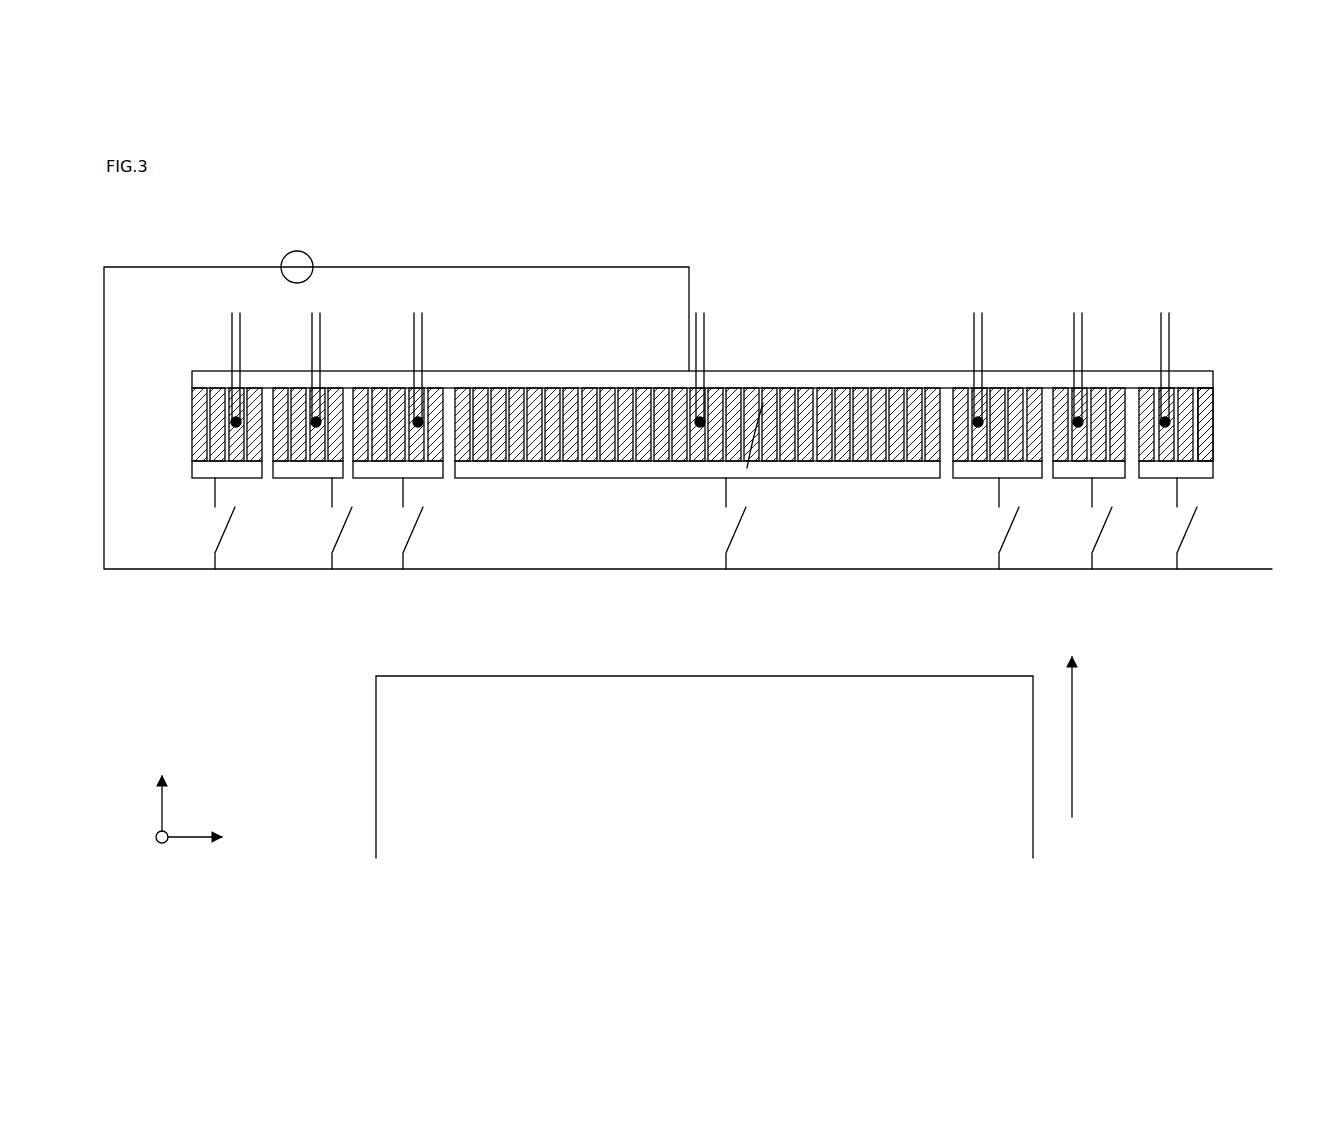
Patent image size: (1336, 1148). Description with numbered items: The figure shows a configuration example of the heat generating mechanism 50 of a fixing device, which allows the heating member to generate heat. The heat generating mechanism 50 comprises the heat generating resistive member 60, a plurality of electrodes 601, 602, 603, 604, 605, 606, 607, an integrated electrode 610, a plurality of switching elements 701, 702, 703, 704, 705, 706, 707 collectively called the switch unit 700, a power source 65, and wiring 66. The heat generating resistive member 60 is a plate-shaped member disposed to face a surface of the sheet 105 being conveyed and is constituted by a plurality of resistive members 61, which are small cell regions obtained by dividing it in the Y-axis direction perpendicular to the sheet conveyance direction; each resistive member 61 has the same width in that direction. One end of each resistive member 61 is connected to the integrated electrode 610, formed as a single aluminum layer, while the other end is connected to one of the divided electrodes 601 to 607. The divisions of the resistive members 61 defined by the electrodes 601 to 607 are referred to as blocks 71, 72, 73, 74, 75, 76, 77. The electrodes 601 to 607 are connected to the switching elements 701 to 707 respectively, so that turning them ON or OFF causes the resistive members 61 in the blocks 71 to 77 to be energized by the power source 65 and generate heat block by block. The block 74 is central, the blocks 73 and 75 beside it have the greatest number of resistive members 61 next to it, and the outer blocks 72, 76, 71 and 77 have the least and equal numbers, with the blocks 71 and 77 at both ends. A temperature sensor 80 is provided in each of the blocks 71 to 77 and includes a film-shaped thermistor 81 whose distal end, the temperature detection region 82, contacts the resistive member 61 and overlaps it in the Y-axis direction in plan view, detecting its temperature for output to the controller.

The heat generating mechanism 50 is at (1122, 236).
The heat generating resistive member 60 is at (190, 434).
The resistive members 61 is at (207, 394).
The power source 65 is at (302, 252).
The wiring 66 is at (190, 267).
The block 71 is at (218, 352).
The block 72 is at (296, 352).
The block 73 is at (385, 352).
The block 74 is at (583, 360).
The block 75 is at (1022, 360).
The block 76 is at (1115, 360).
The block 77 is at (1203, 360).
The temperature sensor 80 is at (711, 565).
The thermistor 81 is at (240, 325).
The temperature detection region 82 is at (240, 418).
The sheet 105 is at (385, 737).
The integrated electrode 610 is at (636, 379).
The electrode 601 is at (235, 404).
The electrode 602 is at (307, 406).
The electrode 603 is at (410, 404).
The electrode 604 is at (697, 405).
The electrode 605 is at (1008, 405).
The electrode 606 is at (1100, 405).
The electrode 607 is at (1188, 405).
The switch unit 700 is at (205, 535).
The switching element 701 is at (230, 518).
The switching element 702 is at (347, 518).
The switching element 703 is at (418, 518).
The switching element 704 is at (741, 518).
The switching element 705 is at (1014, 518).
The switching element 706 is at (1107, 518).
The switching element 707 is at (1192, 518).